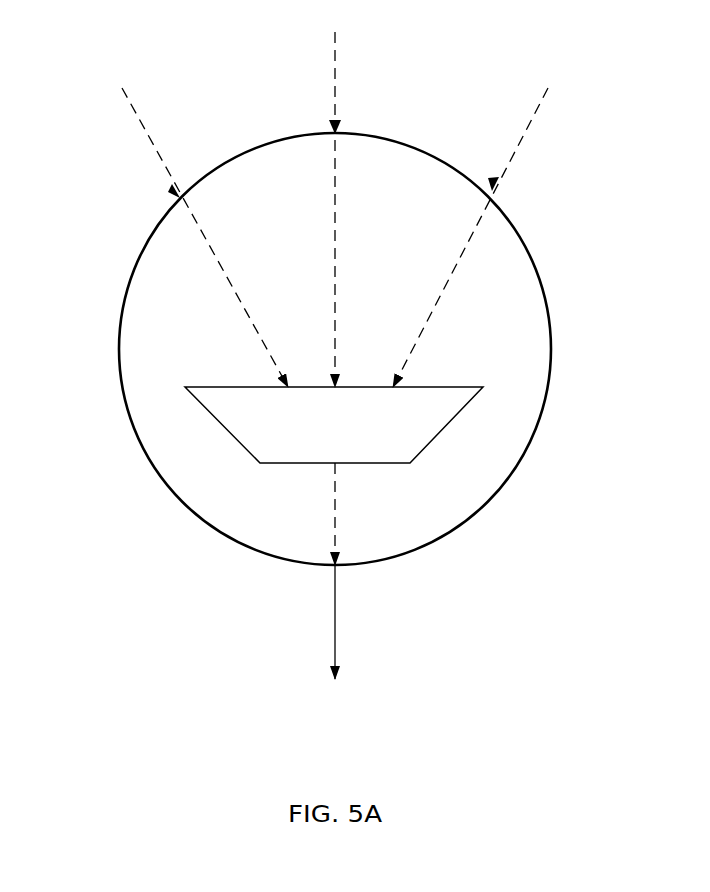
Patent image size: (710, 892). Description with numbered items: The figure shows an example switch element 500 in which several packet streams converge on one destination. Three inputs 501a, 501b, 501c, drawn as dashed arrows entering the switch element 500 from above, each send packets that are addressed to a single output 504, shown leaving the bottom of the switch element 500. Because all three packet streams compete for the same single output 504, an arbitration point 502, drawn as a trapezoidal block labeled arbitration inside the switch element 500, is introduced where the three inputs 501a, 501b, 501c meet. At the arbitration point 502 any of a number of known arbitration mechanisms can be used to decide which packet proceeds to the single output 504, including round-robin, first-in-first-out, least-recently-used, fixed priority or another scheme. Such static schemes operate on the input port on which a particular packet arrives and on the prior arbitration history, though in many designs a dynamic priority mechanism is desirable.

The switch element 500 is at (120, 350).
The input 501a is at (122, 88).
The input 501b is at (335, 48).
The input 501c is at (548, 88).
The arbitration point 502 is at (185, 387).
The single output 504 is at (335, 622).